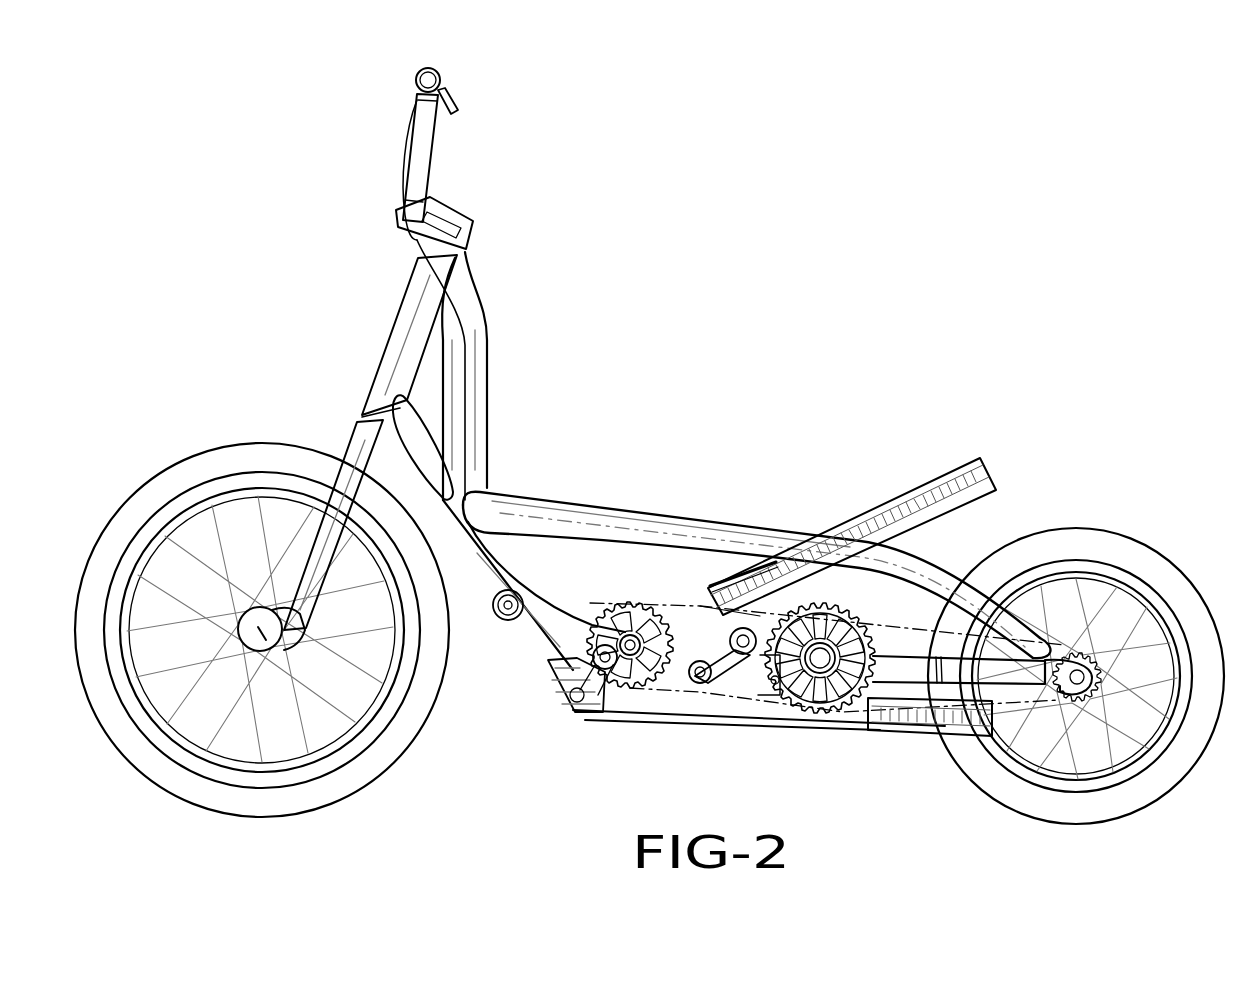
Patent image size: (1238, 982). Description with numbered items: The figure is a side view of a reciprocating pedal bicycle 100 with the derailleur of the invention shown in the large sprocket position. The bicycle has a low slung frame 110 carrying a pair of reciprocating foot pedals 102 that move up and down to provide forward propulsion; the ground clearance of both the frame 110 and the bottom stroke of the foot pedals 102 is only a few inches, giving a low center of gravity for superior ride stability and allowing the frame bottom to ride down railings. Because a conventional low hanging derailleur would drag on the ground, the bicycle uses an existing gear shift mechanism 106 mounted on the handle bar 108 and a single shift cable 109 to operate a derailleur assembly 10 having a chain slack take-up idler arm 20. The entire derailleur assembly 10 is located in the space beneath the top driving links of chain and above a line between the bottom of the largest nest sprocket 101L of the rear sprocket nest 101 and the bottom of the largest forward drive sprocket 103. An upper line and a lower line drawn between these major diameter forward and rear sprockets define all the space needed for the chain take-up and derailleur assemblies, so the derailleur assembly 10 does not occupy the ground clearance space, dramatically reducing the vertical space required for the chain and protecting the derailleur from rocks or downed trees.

The derailleur assembly 10 is at (727, 637).
The chain slack take-up idler arm 20 is at (708, 685).
The reciprocating pedal bicycle 100 is at (662, 582).
The sprocket nest 101 is at (810, 608).
The largest nest sprocket 101L is at (820, 703).
The reciprocating foot pedals 102 is at (902, 498).
The forward drive sprocket 103 is at (607, 618).
The gear shift mechanism 106 is at (455, 100).
The handle bar 108 is at (420, 74).
The shift cable 109 is at (733, 670).
The frame 110 is at (532, 600).